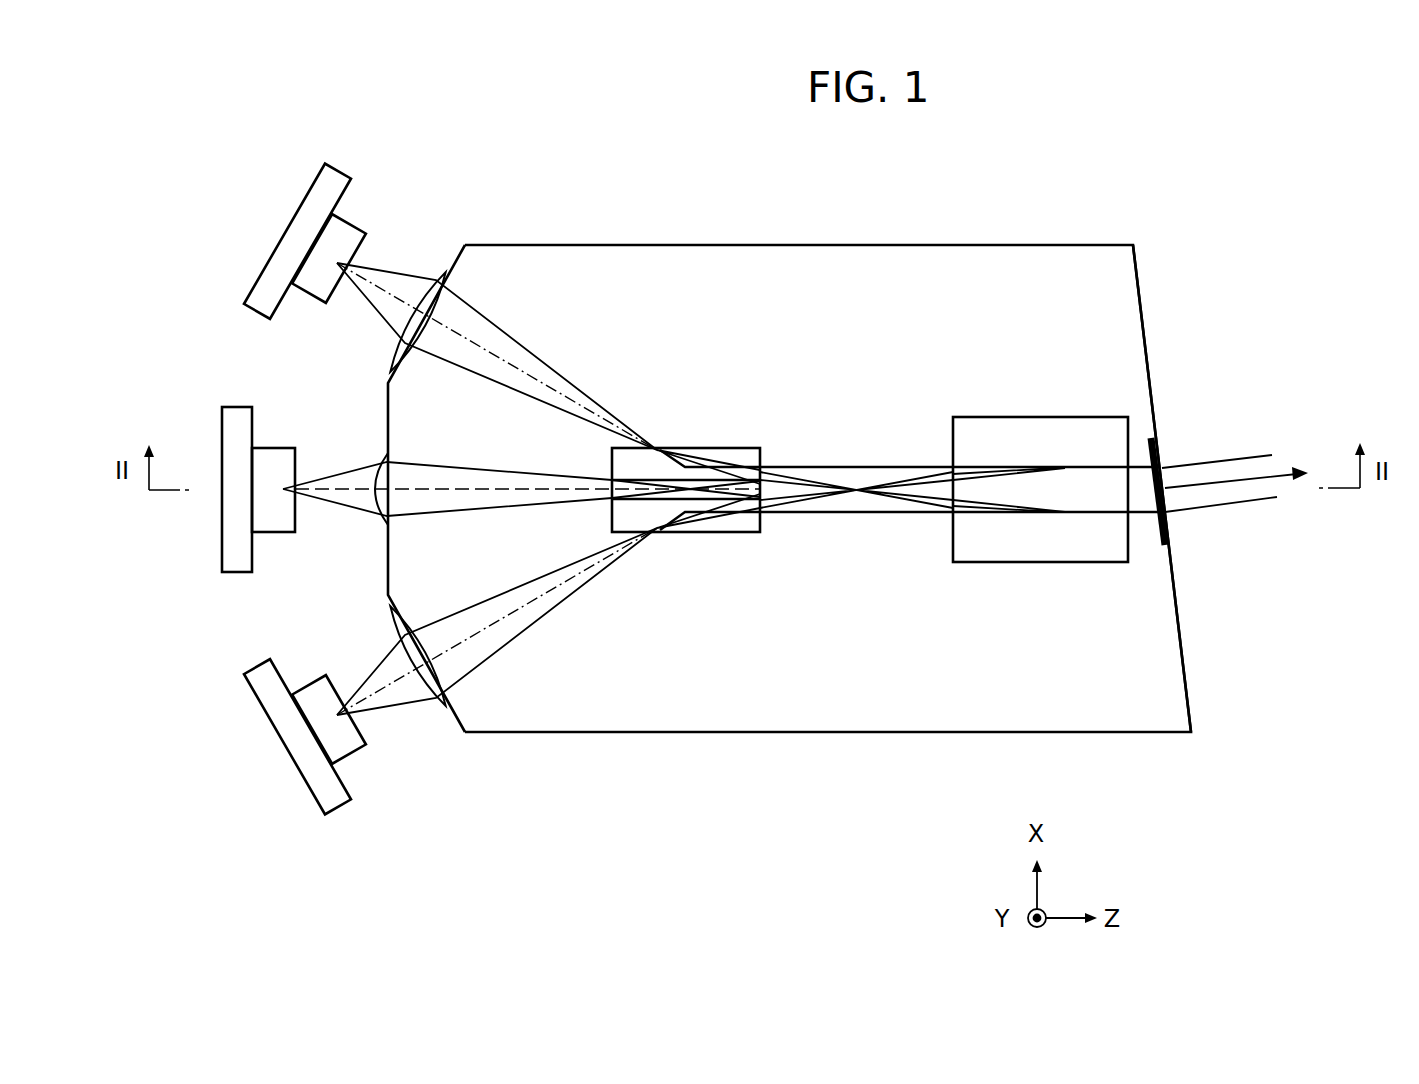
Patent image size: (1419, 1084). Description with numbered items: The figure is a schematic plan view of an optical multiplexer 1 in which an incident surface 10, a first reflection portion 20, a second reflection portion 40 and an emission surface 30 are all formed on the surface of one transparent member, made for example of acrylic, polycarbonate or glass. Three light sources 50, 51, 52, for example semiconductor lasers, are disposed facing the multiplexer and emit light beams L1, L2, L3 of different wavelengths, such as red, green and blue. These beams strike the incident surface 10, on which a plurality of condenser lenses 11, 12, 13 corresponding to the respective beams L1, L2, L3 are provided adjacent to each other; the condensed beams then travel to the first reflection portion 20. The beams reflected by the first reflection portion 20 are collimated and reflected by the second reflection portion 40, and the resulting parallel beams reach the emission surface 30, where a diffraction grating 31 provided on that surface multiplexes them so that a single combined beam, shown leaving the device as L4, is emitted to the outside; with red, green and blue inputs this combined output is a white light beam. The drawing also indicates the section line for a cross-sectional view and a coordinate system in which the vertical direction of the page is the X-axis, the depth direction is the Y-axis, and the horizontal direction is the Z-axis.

The optical multiplexer 1 is at (988, 226).
The incident surface 10 is at (397, 366).
The condenser lens 11 is at (380, 448).
The condenser lens 12 is at (437, 273).
The condenser lens 13 is at (447, 710).
The first reflection portion 20 is at (698, 533).
The emission surface 30 is at (1182, 637).
The diffraction grating 31 is at (1162, 457).
The second reflection portion 40 is at (1015, 563).
The light source 50 is at (222, 418).
The light source 51 is at (303, 202).
The light source 52 is at (301, 779).
The light beam L1 is at (347, 493).
The light beam L2 is at (382, 289).
The light beam L3 is at (392, 685).
The emitted light beam L4 is at (1280, 472).